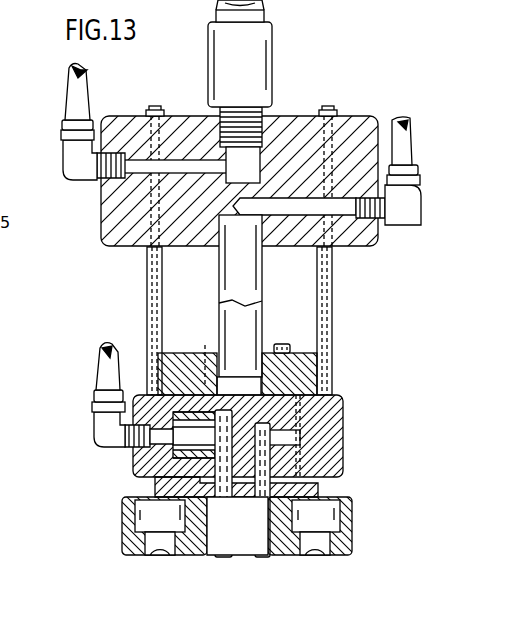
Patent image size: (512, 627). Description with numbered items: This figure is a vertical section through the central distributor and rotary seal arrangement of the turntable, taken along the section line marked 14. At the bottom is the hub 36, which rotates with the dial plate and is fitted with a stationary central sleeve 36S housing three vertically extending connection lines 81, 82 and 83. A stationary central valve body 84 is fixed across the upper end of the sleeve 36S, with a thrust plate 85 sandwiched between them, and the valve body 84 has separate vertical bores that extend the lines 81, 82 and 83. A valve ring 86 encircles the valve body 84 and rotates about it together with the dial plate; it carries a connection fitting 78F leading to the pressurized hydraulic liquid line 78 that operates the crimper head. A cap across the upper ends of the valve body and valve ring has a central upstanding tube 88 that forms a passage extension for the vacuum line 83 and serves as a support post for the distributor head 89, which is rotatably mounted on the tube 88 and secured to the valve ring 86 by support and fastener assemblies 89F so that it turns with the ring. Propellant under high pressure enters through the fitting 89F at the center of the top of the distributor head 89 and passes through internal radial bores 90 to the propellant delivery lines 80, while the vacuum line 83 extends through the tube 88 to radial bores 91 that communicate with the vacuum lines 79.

The distributor head 89 is at (284, 126).
The support and fastener assemblies 89F is at (272, 30).
The internal radial bores 90 is at (172, 166).
The radial bores 91 is at (278, 207).
The pressurized propellant delivery line 80 is at (88, 92).
The vacuum line 79 is at (398, 128).
The central upstanding tube 88 is at (262, 297).
The central valve body 84 is at (314, 380).
The vacuum line 83 is at (206, 348).
The valve ring 86 is at (342, 420).
The pressurized hydraulic liquid line 78 is at (101, 347).
The connection fitting 78F is at (96, 425).
The thrust plate 85 is at (318, 484).
The connection line 81 is at (224, 558).
The connection line 82 is at (262, 558).
The hub 36 is at (254, 549).
The stationary central sleeve 36S is at (190, 560).
The section line 14- 14 is at (28, 460).